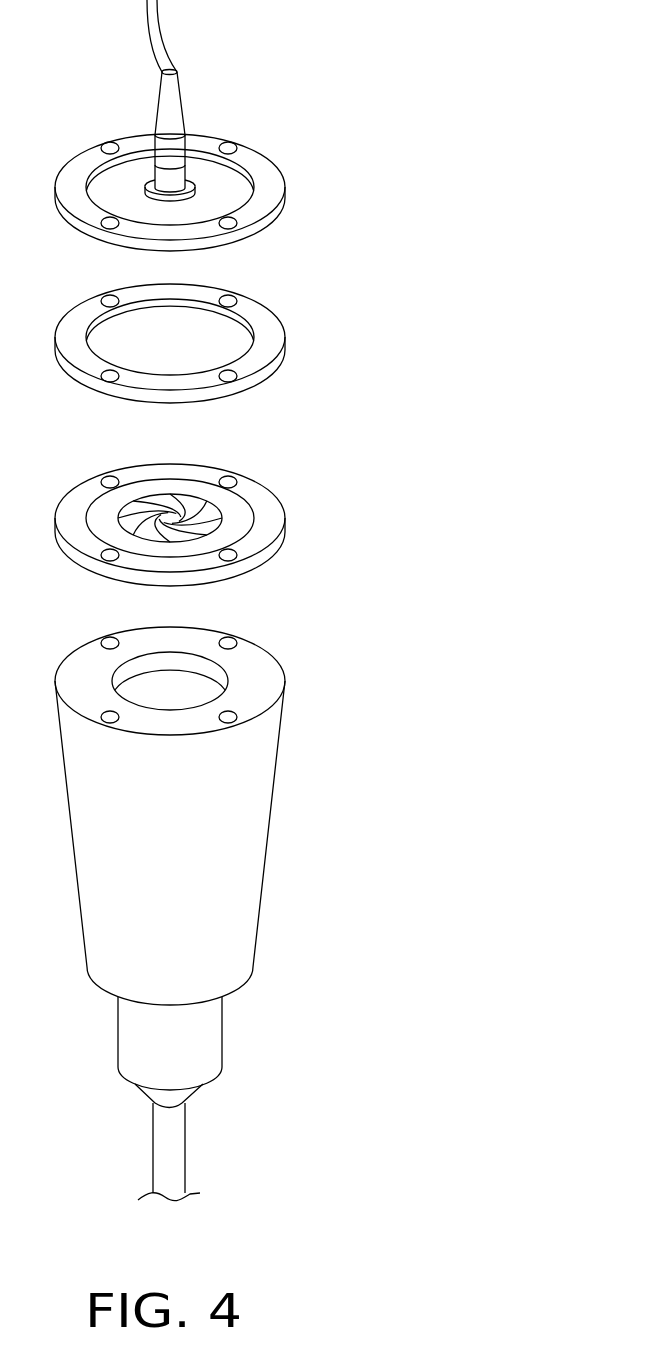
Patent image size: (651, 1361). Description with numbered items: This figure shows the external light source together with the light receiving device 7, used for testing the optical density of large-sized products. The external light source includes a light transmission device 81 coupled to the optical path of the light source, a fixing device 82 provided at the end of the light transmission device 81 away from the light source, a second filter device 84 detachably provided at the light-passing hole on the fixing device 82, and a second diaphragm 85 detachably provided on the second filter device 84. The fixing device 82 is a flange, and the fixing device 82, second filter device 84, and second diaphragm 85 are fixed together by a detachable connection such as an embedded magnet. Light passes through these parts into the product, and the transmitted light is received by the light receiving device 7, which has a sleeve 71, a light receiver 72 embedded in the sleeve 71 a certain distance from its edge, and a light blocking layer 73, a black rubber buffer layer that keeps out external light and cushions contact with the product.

The light receiving device 7 is at (259, 914).
The sleeve 71 is at (178, 802).
The light receiver 72 is at (180, 692).
The light blocking layer 73 is at (178, 720).
The light transmission device 81 is at (158, 37).
The fixing device 82 is at (267, 188).
The second filter device 84 is at (267, 333).
The second diaphragm 85 is at (172, 520).